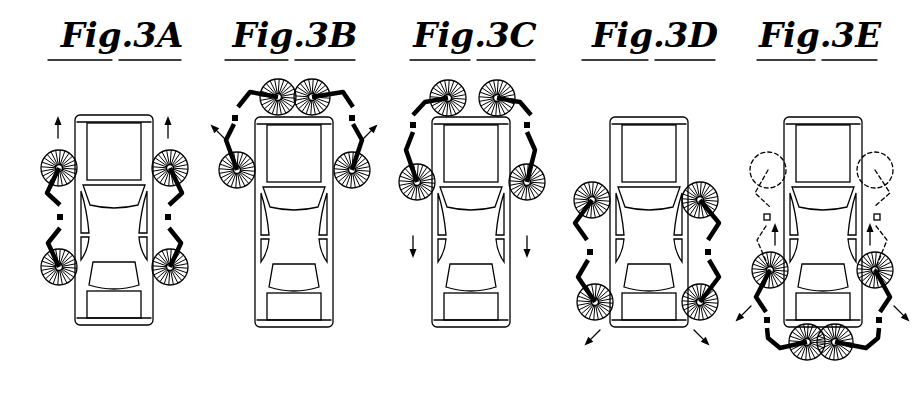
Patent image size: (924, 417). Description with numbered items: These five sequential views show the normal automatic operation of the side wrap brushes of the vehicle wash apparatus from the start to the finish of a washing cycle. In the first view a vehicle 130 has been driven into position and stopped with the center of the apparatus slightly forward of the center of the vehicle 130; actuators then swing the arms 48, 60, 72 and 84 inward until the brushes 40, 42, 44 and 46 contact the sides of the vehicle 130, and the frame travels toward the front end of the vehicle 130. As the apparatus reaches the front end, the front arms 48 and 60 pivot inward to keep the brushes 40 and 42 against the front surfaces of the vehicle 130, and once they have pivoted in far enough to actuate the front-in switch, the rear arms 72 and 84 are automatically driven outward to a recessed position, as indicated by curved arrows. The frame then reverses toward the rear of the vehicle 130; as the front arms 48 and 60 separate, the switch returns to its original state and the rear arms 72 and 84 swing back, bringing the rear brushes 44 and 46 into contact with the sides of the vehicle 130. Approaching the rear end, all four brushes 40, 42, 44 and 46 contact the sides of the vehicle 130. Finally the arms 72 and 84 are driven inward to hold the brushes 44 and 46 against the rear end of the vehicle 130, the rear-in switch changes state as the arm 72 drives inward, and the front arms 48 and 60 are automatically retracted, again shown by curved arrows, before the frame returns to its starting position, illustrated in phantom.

In FIG. 3A, the vehicle 130 is at (110, 115).
In FIG. 3B, the vehicle 130 is at (312, 322).
In FIG. 3C, the vehicle 130 is at (487, 322).
In FIG. 3D, the vehicle 130 is at (650, 123).
In FIG. 3E, the vehicle 130 is at (825, 123).
In FIG. 3A, the brush 40 is at (56, 148).
In FIG. 3B, the brush 40 is at (270, 85).
In FIG. 3C, the brush 40 is at (437, 84).
In FIG. 3D, the brush 40 is at (587, 186).
In FIG. 3E, the brush 40 is at (760, 255).
In FIG. 3A, the brush 42 is at (172, 148).
In FIG. 3B, the brush 42 is at (322, 82).
In FIG. 3C, the brush 42 is at (505, 84).
In FIG. 3D, the brush 42 is at (703, 182).
In FIG. 3E, the brush 42 is at (893, 252).
In FIG. 3A, the brush 44 is at (62, 288).
In FIG. 3B, the brush 44 is at (238, 192).
In FIG. 3C, the brush 44 is at (412, 205).
In FIG. 3D, the brush 44 is at (581, 316).
In FIG. 3E, the brush 44 is at (802, 362).
In FIG. 3A, the brush 46 is at (185, 280).
In FIG. 3C, the brush 46 is at (545, 160).
In FIG. 3D, the brush 46 is at (708, 323).
In FIG. 3E, the brush 46 is at (842, 362).
In FIG. 3A, the arm 48 is at (45, 192).
In FIG. 3B, the arm 48 is at (238, 103).
In FIG. 3C, the arm 48 is at (410, 110).
In FIG. 3D, the arm 48 is at (573, 240).
In FIG. 3E, the arm 48 is at (757, 318).
In FIG. 3A, the arm 60 is at (183, 201).
In FIG. 3B, the arm 60 is at (345, 97).
In FIG. 3C, the arm 60 is at (531, 100).
In FIG. 3D, the arm 60 is at (718, 220).
In FIG. 3E, the arm 60 is at (892, 305).
In FIG. 3A, the arm 72 is at (55, 231).
In FIG. 3B, the arm 72 is at (225, 142).
In FIG. 3C, the arm 72 is at (403, 160).
In FIG. 3D, the arm 72 is at (580, 278).
In FIG. 3E, the arm 72 is at (772, 344).
In FIG. 3A, the arm 84 is at (185, 236).
In FIG. 3B, the arm 84 is at (368, 138).
In FIG. 3C, the arm 84 is at (545, 140).
In FIG. 3D, the arm 84 is at (706, 262).
In FIG. 3E, the arm 84 is at (868, 348).